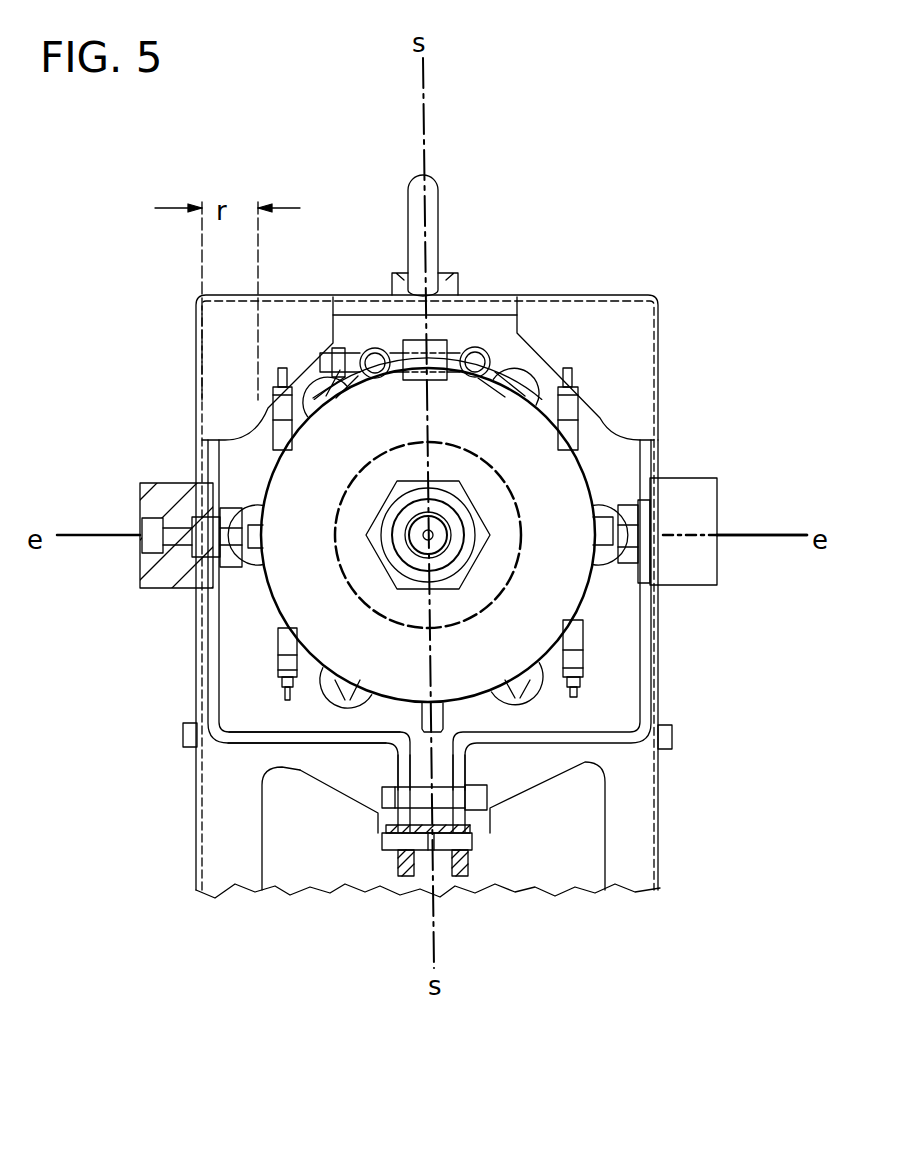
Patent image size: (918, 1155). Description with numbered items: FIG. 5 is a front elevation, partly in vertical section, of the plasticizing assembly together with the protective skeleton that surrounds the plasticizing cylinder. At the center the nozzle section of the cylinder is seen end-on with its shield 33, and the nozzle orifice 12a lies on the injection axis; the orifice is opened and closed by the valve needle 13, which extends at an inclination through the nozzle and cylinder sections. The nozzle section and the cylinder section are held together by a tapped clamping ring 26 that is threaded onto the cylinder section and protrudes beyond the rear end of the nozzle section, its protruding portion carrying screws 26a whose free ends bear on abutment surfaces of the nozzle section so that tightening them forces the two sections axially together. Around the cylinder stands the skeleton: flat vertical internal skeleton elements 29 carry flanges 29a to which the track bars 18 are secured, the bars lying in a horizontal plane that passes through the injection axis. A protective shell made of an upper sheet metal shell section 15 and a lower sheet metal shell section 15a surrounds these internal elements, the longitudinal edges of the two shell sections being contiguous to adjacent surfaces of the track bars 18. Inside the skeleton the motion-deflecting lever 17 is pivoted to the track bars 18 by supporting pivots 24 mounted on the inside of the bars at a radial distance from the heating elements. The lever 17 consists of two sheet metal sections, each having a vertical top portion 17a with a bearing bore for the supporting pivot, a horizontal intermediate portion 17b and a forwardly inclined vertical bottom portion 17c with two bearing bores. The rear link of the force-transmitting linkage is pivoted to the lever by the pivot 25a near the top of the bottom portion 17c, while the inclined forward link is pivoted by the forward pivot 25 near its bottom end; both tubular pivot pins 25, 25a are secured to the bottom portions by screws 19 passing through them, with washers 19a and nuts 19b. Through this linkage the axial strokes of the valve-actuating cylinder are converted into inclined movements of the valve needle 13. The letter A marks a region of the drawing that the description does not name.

The upper sheet metal shell section 15 is at (570, 322).
The lower sheet metal shell section 15a is at (662, 803).
The internal skeleton element 29 is at (458, 332).
The flange 29a is at (257, 455).
The motion-deflecting lever 17 is at (240, 757).
The vertical top portion 17a is at (215, 683).
The horizontal intermediate portion 17b is at (298, 740).
The forwardly inclined vertical bottom portion 17c is at (368, 770).
The valve needle 13 is at (432, 718).
The pivot 25a is at (447, 791).
The screw 19 is at (477, 843).
The washer 19a is at (405, 862).
The nut 19b is at (398, 858).
The forward pivot 25 is at (445, 855).
The shield 33 is at (352, 641).
The nozzle orifice 12a is at (432, 537).
The screw 26a is at (332, 395).
The clamping ring 26 is at (265, 470).
The track bar 18 is at (165, 500).
The supporting pivot 24 is at (147, 588).
The direction A is at (693, 570).